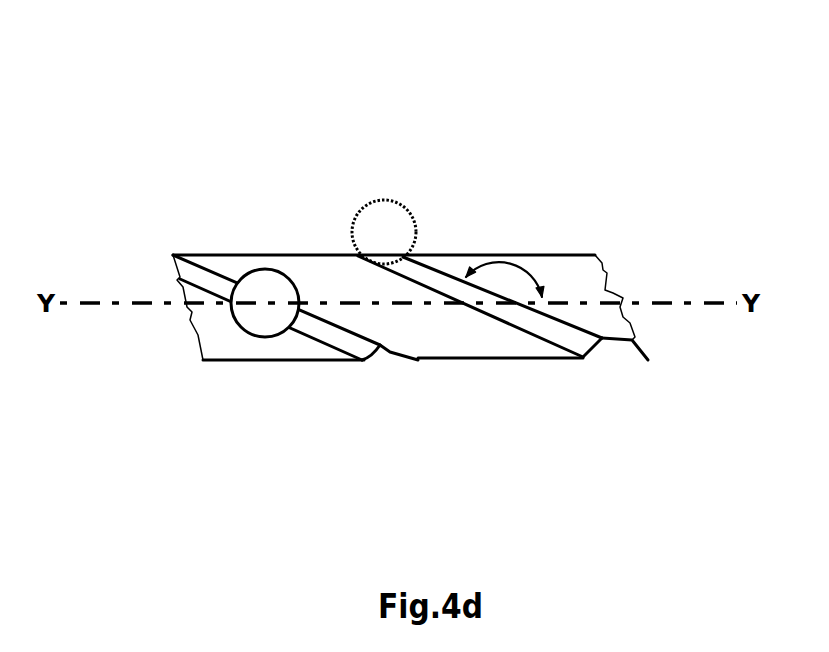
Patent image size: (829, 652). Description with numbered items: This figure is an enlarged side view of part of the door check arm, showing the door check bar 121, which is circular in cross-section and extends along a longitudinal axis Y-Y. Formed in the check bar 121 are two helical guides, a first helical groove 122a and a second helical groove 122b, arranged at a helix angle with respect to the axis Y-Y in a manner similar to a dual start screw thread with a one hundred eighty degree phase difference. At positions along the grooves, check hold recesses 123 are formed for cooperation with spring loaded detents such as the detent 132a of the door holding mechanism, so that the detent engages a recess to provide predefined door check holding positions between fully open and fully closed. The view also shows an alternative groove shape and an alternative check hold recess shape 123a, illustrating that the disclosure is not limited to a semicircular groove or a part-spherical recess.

The door check bar 121 is at (323, 255).
The first helical groove 122a is at (210, 278).
The second helical groove 122b is at (451, 273).
The check hold recess 123 is at (268, 270).
The alternative check hold recess shape 123a is at (610, 363).
The spring loaded detent 132a is at (385, 200).